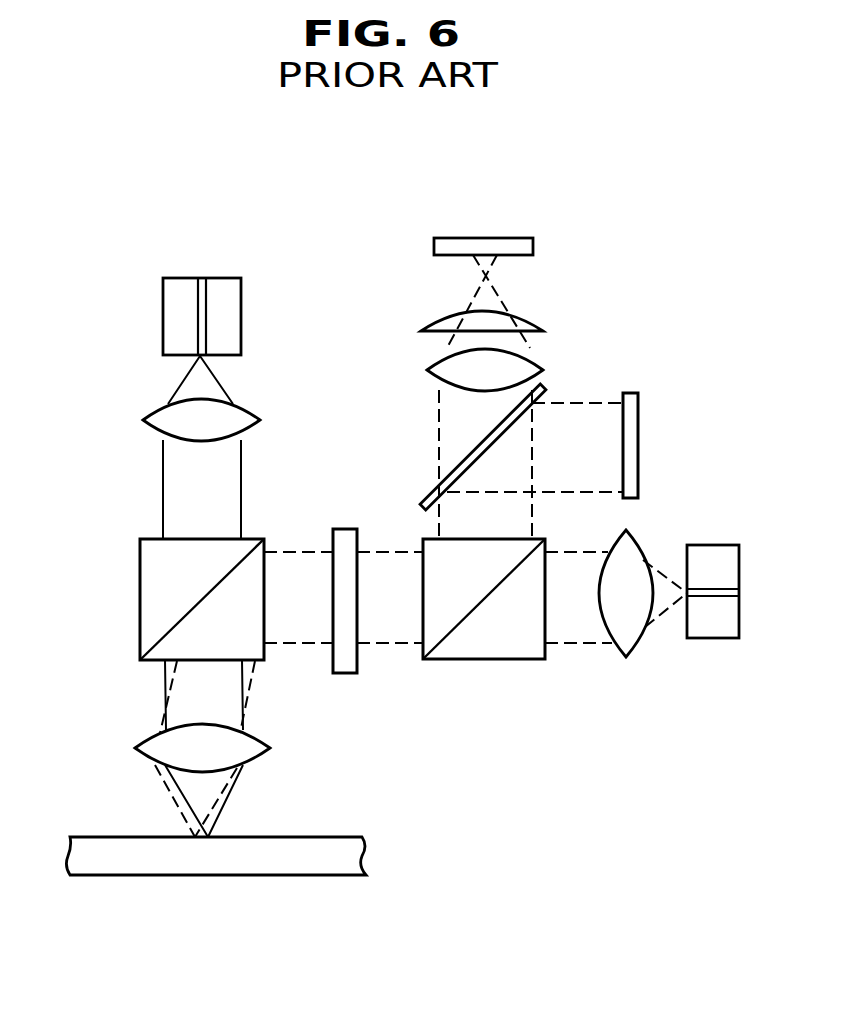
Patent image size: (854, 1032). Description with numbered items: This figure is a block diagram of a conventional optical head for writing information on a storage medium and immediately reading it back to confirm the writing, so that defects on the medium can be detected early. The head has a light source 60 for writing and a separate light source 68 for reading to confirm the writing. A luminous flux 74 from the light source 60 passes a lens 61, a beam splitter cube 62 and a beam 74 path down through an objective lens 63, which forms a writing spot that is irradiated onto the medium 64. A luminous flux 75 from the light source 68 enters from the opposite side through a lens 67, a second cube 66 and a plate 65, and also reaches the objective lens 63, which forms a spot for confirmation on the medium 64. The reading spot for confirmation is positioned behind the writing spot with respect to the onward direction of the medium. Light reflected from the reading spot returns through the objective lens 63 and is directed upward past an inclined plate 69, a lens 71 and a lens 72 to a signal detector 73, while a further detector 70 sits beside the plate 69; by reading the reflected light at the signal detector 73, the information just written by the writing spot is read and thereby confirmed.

The light source for writing 60 is at (173, 307).
The collimator lens 61 is at (165, 413).
The beam splitter 62 is at (155, 562).
The objective lens 63 is at (150, 745).
The medium 64 is at (110, 843).
The quarter wave plate 65 is at (345, 674).
The polarizing beam splitter 66 is at (520, 656).
The condensing lens 67 is at (630, 641).
The light source for reading 68 is at (725, 637).
The half mirror 69 is at (457, 467).
The photodetector 70 is at (639, 407).
The condensing lens 71 is at (544, 368).
The cylindrical lens 72 is at (544, 330).
The signal detector 73 is at (533, 248).
The luminous flux 74 is at (242, 477).
The luminous flux 75 is at (583, 644).